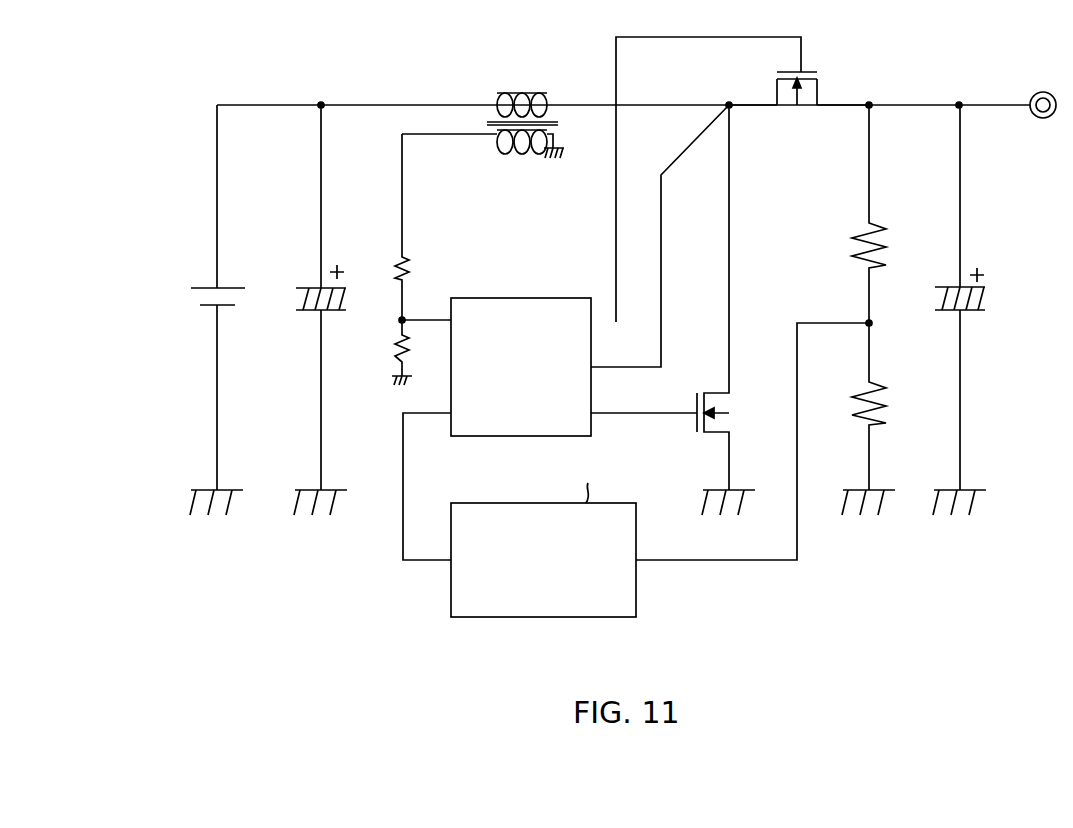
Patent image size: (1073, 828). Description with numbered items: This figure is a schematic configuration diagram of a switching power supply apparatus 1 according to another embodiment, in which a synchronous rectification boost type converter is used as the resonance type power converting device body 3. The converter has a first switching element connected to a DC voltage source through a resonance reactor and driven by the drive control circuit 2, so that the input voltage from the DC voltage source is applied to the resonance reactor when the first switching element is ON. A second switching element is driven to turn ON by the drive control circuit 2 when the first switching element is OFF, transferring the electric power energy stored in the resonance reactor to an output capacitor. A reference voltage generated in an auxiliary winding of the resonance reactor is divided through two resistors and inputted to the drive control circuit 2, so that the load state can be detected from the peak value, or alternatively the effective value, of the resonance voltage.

The power supply device 1 is at (920, 68).
The drive control circuit 2 is at (524, 298).
The resonance type power converting device body 3 is at (772, 175).